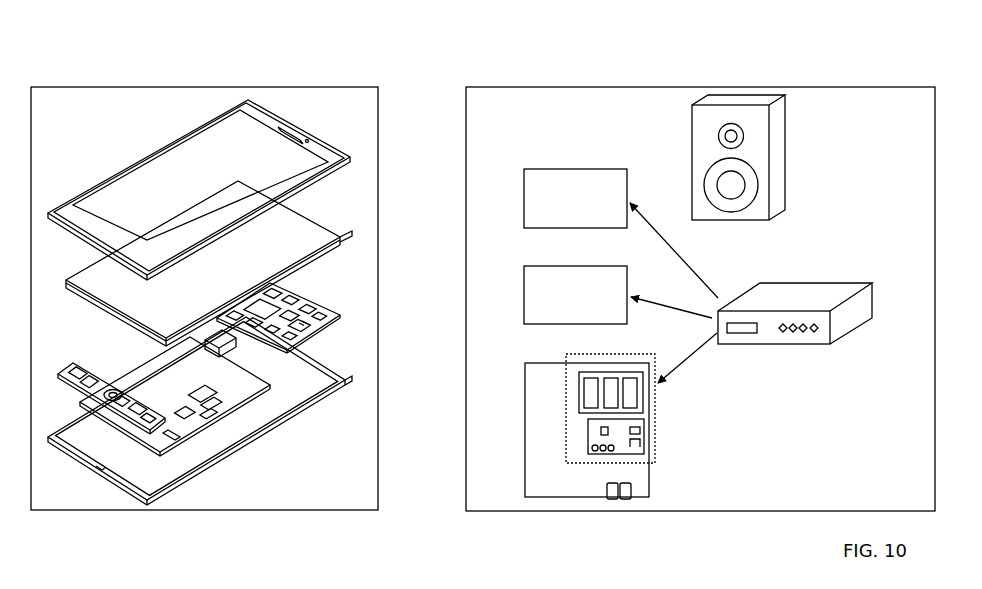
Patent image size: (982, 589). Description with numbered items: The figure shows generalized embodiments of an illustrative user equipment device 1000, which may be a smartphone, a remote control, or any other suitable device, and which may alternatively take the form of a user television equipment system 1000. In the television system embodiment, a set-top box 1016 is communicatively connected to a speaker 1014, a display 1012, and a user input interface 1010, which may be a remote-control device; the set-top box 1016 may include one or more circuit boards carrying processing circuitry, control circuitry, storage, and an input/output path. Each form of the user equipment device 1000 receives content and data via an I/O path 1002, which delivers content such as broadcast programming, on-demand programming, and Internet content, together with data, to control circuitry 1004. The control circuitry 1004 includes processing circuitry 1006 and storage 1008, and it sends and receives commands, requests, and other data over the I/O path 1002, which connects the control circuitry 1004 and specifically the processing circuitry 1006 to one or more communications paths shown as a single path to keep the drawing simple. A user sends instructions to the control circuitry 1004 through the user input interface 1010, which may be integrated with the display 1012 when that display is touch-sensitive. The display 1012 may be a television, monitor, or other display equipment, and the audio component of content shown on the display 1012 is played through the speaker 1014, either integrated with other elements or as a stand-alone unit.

The user equipment device 1000 is at (483, 272).
The I/O path 1002 is at (101, 395).
The control circuitry 1004 is at (341, 388).
The processing circuitry 1006 is at (309, 346).
The storage 1008 is at (301, 330).
The user input interface 1010 is at (279, 221).
The display 1012 is at (332, 261).
The speaker 1014 is at (287, 123).
The set-top box 1016 is at (820, 283).